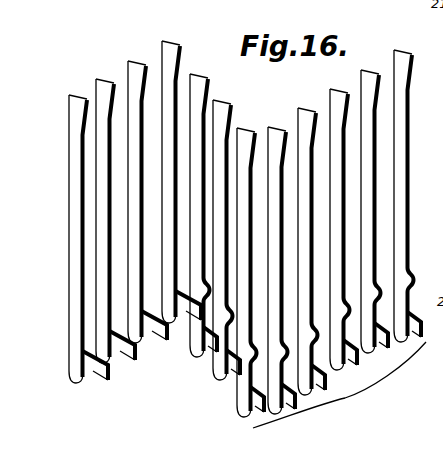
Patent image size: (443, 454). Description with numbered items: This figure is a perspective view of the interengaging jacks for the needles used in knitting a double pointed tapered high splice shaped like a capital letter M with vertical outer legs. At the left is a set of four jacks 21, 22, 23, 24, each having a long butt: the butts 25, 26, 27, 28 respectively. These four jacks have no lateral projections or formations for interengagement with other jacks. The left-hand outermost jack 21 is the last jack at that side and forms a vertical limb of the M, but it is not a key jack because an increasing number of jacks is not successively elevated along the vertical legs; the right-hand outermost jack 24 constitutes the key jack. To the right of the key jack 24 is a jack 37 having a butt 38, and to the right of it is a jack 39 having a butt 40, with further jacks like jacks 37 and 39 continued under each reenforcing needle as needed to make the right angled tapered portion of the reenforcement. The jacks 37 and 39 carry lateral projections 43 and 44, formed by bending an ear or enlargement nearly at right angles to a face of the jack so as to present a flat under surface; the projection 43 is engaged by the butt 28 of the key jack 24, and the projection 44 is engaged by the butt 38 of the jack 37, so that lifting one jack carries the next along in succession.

The jack 21 is at (73, 243).
The jack 22 is at (106, 229).
The jack 23 is at (142, 209).
The key jack 24 is at (179, 192).
The butt 25 is at (100, 372).
The butt 26 is at (128, 353).
The butt 27 is at (155, 336).
The butt 28 is at (190, 315).
The jack 37 is at (208, 229).
The butt 38 is at (207, 355).
The jack 39 is at (235, 259).
The butt 40 is at (235, 386).
The lateral projection 43 is at (339, 385).
The lateral projection 44 is at (379, 294).